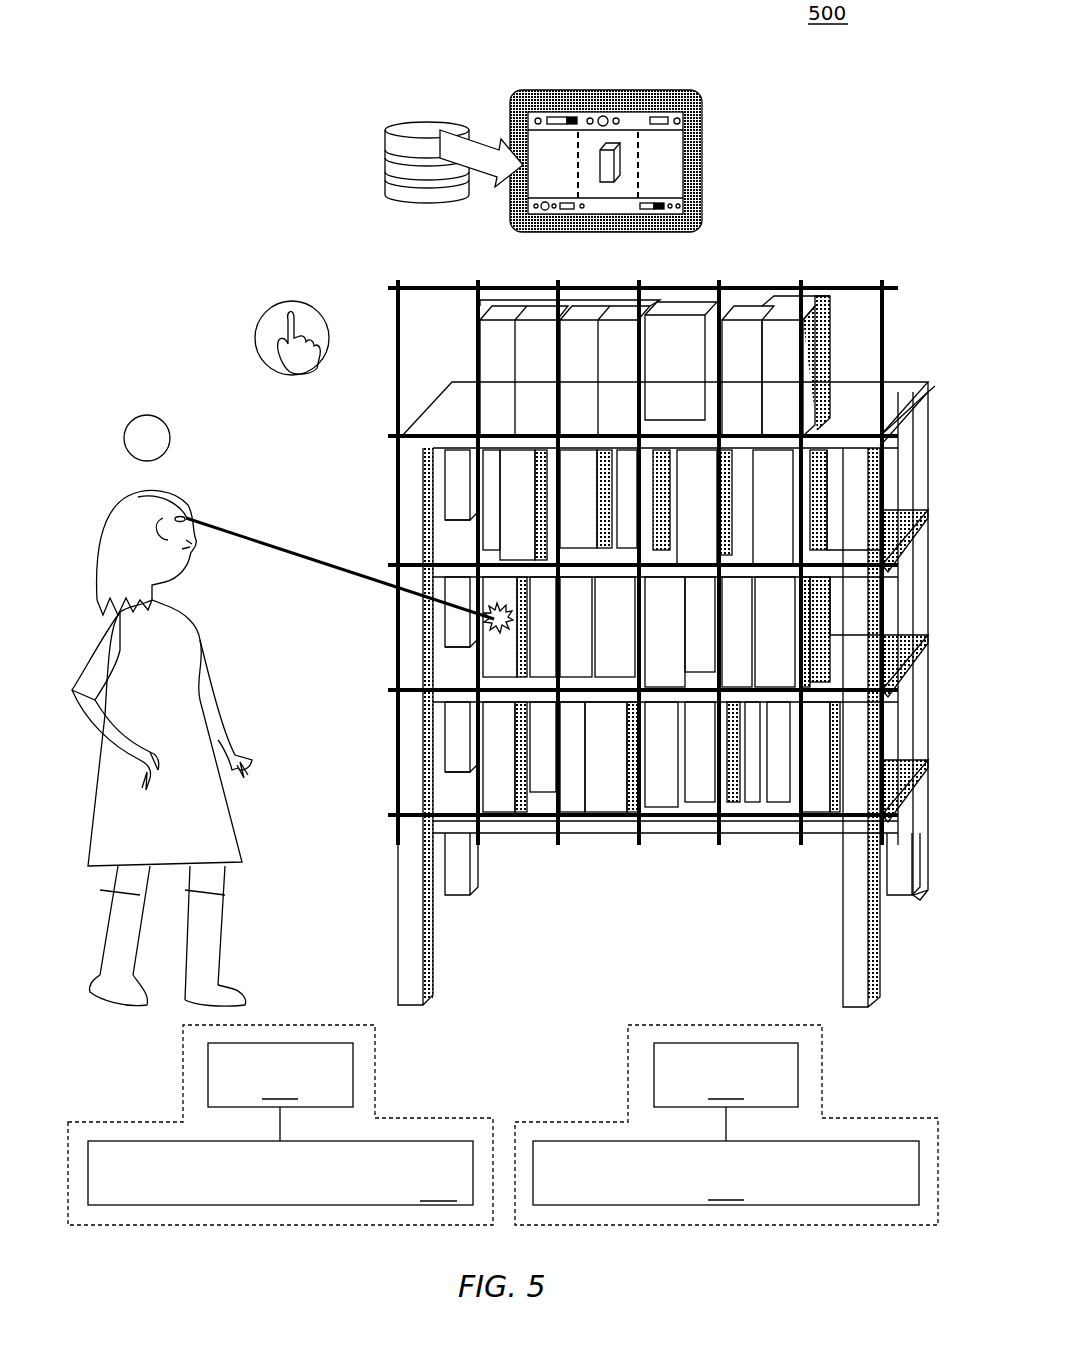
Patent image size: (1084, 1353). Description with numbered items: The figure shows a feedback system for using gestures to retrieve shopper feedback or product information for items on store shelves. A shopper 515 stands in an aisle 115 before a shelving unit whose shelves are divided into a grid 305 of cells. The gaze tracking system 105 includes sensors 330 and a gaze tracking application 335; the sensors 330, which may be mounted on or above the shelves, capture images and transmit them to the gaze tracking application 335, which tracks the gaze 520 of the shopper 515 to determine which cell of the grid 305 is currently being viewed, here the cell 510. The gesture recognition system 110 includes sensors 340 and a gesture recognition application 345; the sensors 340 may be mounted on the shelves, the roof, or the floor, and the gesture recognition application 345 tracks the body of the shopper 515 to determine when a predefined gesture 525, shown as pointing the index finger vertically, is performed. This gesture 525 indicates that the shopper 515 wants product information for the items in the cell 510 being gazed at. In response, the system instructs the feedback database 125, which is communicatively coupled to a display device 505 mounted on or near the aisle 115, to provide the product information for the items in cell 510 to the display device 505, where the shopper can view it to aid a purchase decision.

The display device 505 is at (606, 90).
The feedback database 125 is at (428, 120).
The aisle 115 is at (629, 604).
The grid 305 is at (398, 742).
The cell 510 is at (473, 672).
The gaze 520 is at (300, 560).
The predefined gesture 525 is at (291, 300).
The shopper 515 is at (122, 495).
The gesture recognition system 110 is at (280, 1125).
The sensors 340 is at (280, 1075).
The gesture recognition application 345 is at (280, 1173).
The gaze tracking system 105 is at (726, 1125).
The sensors 330 is at (726, 1075).
The gaze tracking application 335 is at (726, 1173).